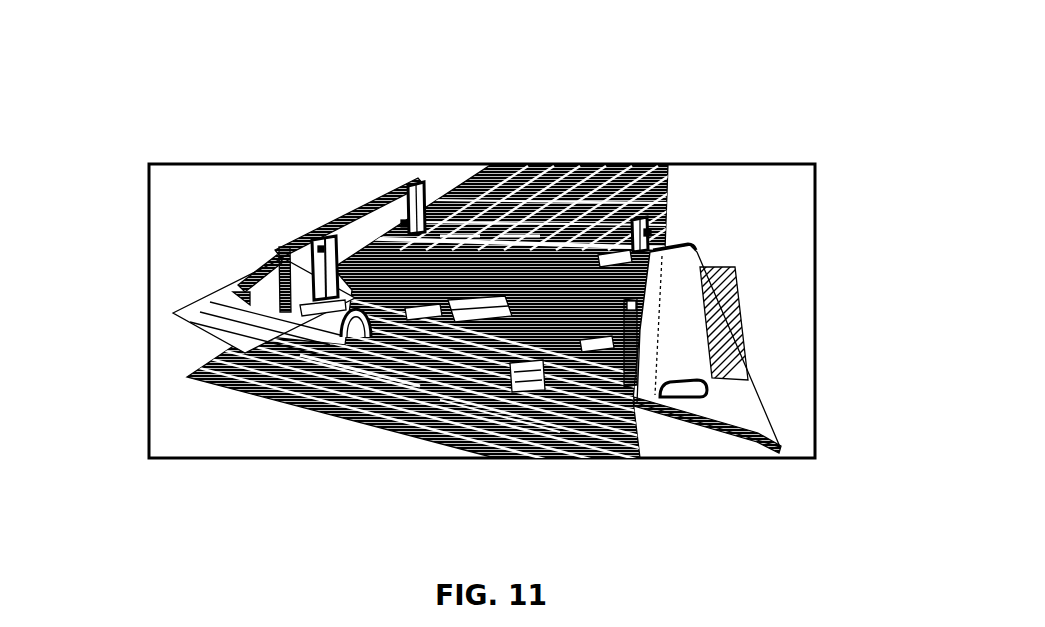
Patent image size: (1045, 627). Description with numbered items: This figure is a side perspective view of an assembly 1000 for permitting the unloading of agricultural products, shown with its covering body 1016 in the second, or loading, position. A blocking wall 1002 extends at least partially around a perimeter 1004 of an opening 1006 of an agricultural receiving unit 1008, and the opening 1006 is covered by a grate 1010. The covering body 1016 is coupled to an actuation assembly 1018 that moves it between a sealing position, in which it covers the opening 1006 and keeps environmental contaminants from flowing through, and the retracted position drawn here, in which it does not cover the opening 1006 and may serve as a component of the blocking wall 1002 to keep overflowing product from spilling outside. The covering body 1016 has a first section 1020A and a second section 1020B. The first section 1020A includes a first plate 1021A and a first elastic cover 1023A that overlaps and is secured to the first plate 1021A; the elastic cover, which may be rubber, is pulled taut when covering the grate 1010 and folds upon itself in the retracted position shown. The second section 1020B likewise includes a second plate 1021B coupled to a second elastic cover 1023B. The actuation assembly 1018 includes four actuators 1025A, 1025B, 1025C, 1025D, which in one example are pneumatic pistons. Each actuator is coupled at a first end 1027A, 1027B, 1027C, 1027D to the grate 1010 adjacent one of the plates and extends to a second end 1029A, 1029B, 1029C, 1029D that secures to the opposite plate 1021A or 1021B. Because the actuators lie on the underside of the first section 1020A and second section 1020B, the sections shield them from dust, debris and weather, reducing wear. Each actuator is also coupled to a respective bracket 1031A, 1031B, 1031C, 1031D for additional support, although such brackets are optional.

The assembly 1000 is at (818, 82).
The blocking wall 1002 is at (612, 385).
The perimeter 1004 is at (227, 305).
The opening 1006 is at (355, 322).
The agricultural receiving unit 1008 is at (337, 362).
The grate 1010 is at (487, 353).
The covering body 1016 is at (706, 133).
The actuation assembly 1018 is at (563, 62).
The first section 1020A is at (317, 232).
The second section 1020B is at (653, 208).
The first plate 1021A is at (395, 207).
The second plate 1021B is at (633, 245).
The first elastic cover 1023A is at (260, 287).
The second elastic cover 1023B is at (687, 258).
The actuator 1025A is at (513, 240).
The actuator 1025B is at (465, 240).
The actuator 1025C is at (540, 330).
The actuator 1025D is at (425, 315).
The first end 1027A is at (610, 260).
The first end 1027B is at (430, 240).
The first end 1027C is at (607, 347).
The first end 1027D is at (313, 313).
The second end 1029A is at (404, 222).
The second end 1029B is at (647, 233).
The second end 1029C is at (321, 249).
The second end 1029D is at (631, 305).
The bracket 1031A is at (647, 235).
The bracket 1031B is at (333, 236).
The bracket 1031C is at (633, 325).
The bracket 1031D is at (285, 262).